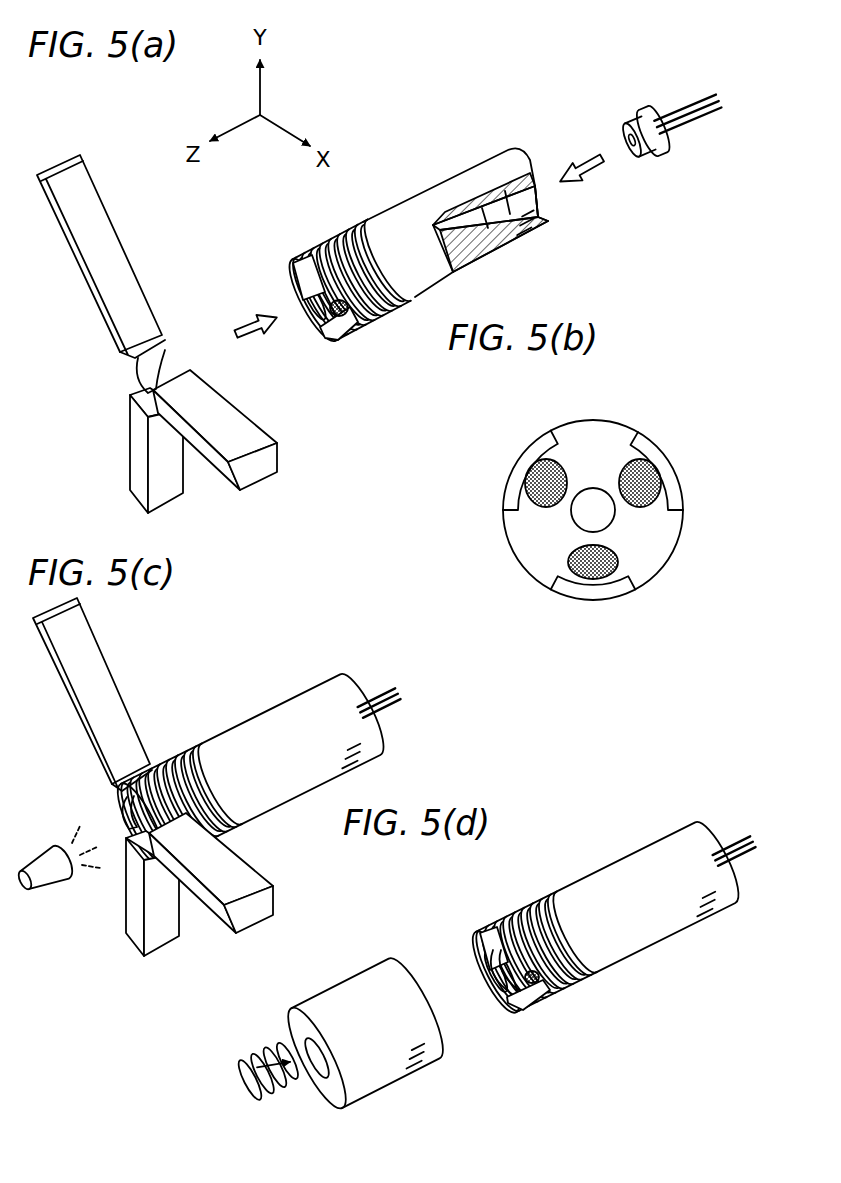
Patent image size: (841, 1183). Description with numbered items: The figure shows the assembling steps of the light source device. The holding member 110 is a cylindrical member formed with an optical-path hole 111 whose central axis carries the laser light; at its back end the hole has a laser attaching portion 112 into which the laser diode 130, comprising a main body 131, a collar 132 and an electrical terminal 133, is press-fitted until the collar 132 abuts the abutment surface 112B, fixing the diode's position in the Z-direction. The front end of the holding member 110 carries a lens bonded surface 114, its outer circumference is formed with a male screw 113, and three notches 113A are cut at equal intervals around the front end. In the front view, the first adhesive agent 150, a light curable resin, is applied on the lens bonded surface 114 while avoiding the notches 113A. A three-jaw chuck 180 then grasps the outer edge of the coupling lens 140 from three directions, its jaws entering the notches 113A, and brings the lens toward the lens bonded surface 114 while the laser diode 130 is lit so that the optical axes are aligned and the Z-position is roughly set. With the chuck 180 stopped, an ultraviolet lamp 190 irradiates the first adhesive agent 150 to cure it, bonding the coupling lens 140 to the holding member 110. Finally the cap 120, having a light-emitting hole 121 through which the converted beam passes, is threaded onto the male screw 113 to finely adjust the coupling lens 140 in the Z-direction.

In FIG. 5A, the holding member 110 is at (443, 175).
In FIG. 5C, the holding member 110 is at (297, 690).
In FIG. 5D, the holding member 110 is at (630, 849).
In FIG. 5B, the optical-path hole 111 is at (583, 526).
In FIG. 5A, the laser attaching portion 112 is at (526, 209).
In FIG. 5A, the abutment surface 112B is at (530, 246).
In FIG. 5A, the male screw 113 is at (342, 232).
In FIG. 5C, the male screw 113 is at (173, 753).
In FIG. 5D, the male screw 113 is at (525, 907).
In FIG. 5A, the notch 113A is at (310, 320).
In FIG. 5B, the notch 113A is at (593, 425).
In FIG. 5A, the lens bonded surface 114 is at (358, 318).
In FIG. 5B, the lens bonded surface 114 is at (656, 528).
In FIG. 5D, the cap 120 is at (348, 976).
In FIG. 5D, the light-emitting hole 121 is at (320, 1081).
In FIG. 5A, the laser diode 130 is at (668, 126).
In FIG. 5C, the laser diode 130 is at (378, 693).
In FIG. 5D, the laser diode 130 is at (735, 839).
In FIG. 5A, the main body 131 is at (630, 167).
In FIG. 5A, the collar 132 is at (686, 136).
In FIG. 5A, the electrical terminal 133 is at (688, 85).
In FIG. 5A, the coupling lens 140 is at (168, 351).
In FIG. 5C, the coupling lens 140 is at (125, 810).
In FIG. 5D, the coupling lens 140 is at (495, 988).
In FIG. 5A, the first adhesive agent 150 is at (343, 338).
In FIG. 5B, the first adhesive agent 150 is at (537, 478).
In FIG. 5D, the first adhesive agent 150 is at (539, 994).
In FIG. 5A, the chuck 180 is at (122, 254).
In FIG. 5C, the chuck 180 is at (93, 652).
In FIG. 5C, the ultraviolet lamp 190 is at (36, 882).